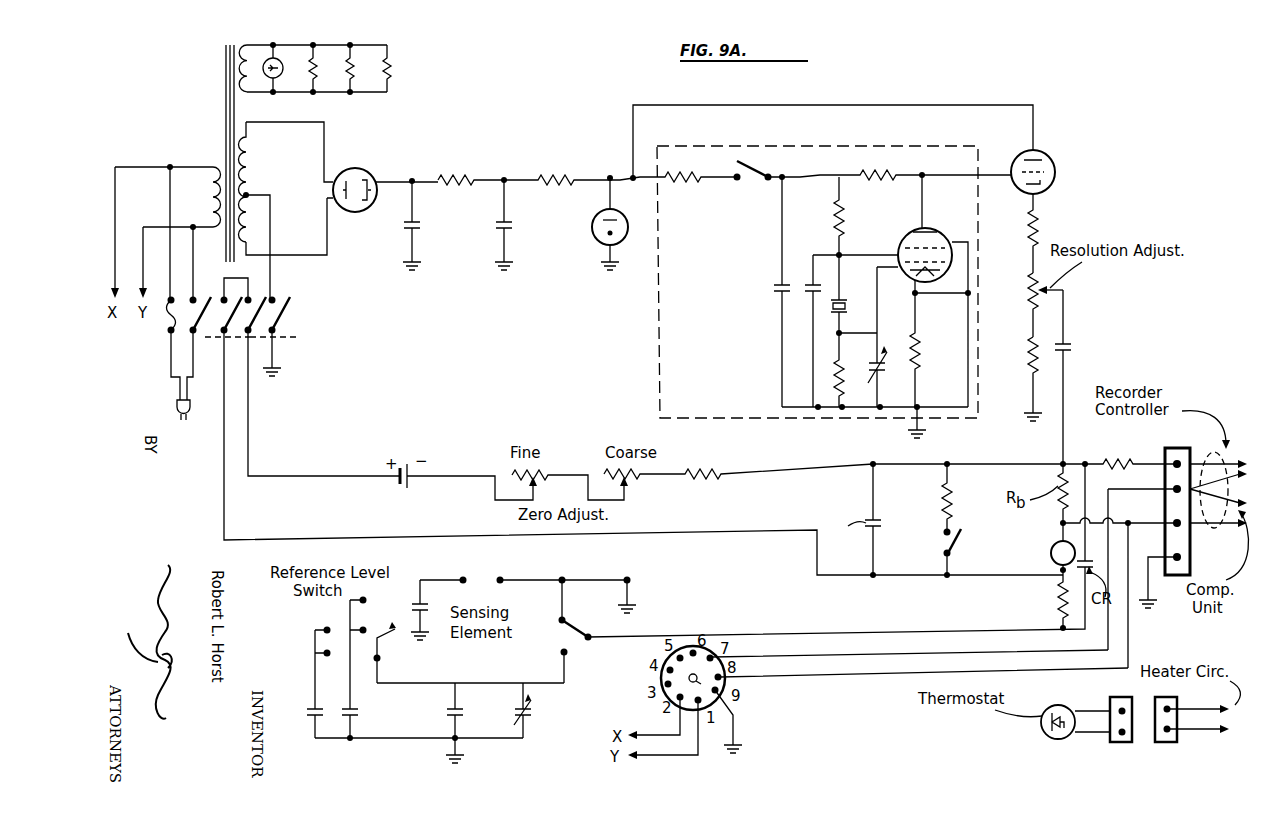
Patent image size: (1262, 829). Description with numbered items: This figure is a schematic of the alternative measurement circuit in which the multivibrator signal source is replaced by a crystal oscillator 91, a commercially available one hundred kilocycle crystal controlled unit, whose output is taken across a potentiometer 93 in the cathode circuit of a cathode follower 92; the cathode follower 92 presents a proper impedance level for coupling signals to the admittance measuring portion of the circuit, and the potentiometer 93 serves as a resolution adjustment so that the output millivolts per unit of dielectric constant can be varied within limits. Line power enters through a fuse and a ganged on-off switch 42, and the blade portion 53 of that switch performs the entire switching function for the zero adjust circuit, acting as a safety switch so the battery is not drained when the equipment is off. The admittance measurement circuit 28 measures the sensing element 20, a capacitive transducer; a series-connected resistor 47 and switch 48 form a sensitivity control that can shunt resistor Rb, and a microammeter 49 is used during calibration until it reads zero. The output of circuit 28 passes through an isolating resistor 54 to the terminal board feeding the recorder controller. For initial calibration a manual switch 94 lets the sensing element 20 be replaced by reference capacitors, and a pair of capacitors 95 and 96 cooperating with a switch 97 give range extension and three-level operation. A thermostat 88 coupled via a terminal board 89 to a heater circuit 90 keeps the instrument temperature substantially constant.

The sensing element 20 is at (485, 578).
The admittance measurement circuit 28 is at (906, 533).
The on-off switch 42 is at (220, 340).
The resistor 47 is at (941, 495).
The switch 48 is at (942, 548).
The microammeter 49 is at (1050, 553).
The switch blades 53 is at (250, 340).
The resistor 54 is at (1103, 463).
The thermostat 88 is at (1044, 730).
The terminal board 89 is at (1158, 742).
The heater circuit 90 is at (1228, 723).
The crystal oscillator 91 is at (657, 325).
The cathode follower 92 is at (1055, 171).
The potentiometer 93 is at (1068, 292).
The manual switch 94 is at (568, 652).
The capacitor 95 is at (360, 713).
The capacitor 96 is at (306, 712).
The switch 97 is at (380, 654).